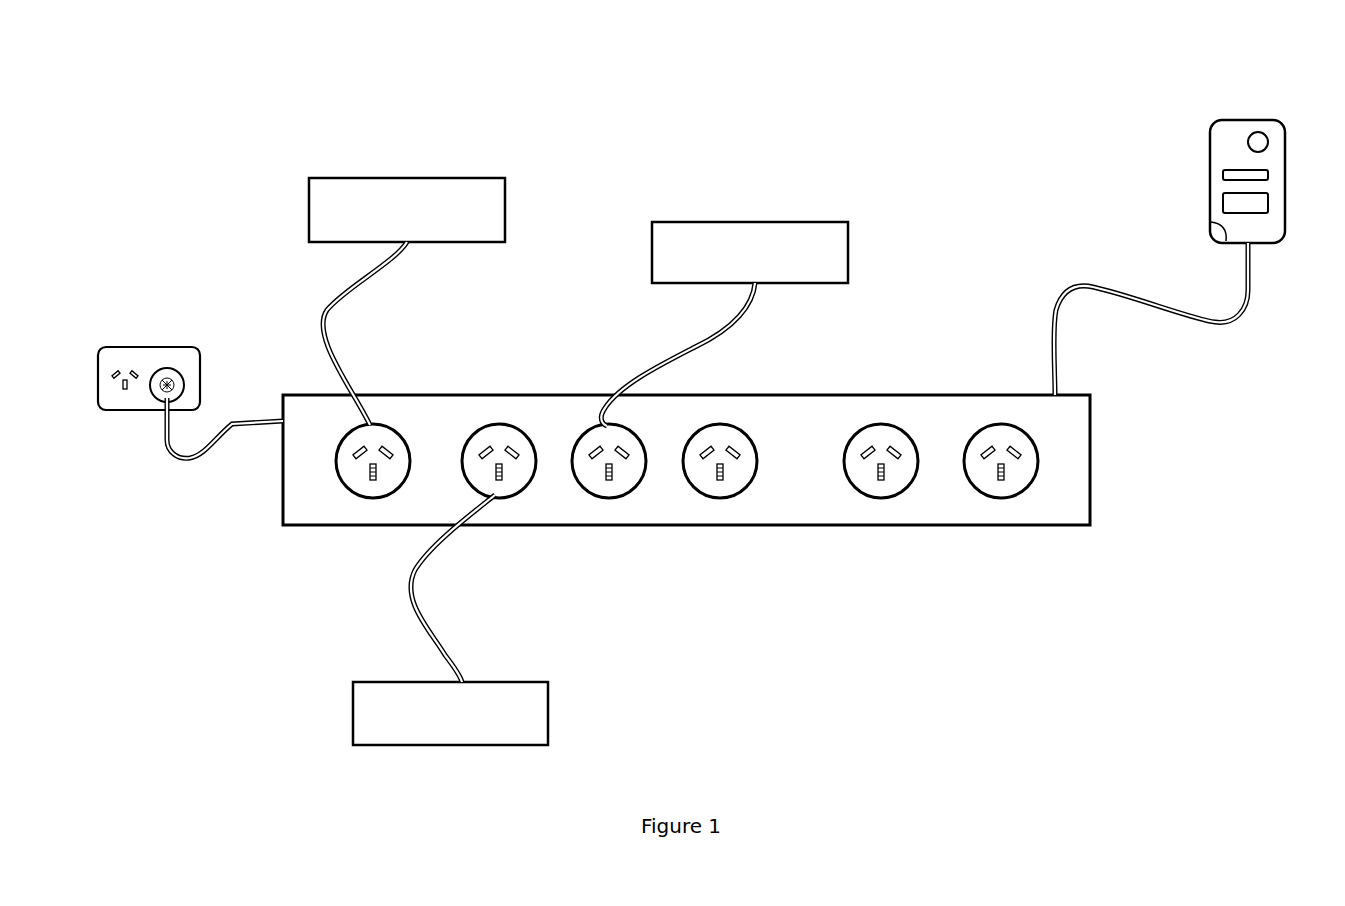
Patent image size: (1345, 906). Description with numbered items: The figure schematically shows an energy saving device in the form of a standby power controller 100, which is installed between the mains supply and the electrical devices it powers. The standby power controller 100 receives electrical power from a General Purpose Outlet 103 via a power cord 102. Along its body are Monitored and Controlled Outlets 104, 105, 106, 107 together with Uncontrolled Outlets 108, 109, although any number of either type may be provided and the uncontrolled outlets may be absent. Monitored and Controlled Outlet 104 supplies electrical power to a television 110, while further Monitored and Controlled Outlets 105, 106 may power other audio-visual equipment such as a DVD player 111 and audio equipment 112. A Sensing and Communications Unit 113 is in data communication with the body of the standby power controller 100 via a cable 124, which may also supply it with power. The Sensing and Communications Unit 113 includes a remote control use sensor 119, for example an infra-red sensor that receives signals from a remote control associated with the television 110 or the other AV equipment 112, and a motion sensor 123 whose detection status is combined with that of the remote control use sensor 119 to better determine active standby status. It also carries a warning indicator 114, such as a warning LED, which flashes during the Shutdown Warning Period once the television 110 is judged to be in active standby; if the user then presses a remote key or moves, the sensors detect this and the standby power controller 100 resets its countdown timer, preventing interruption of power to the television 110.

The standby power controller 100 is at (955, 513).
The power cord 102 is at (170, 443).
The General Purpose Outlet 103 is at (180, 352).
The Monitored and Controlled Outlet 104 is at (355, 483).
The Monitored and Controlled Outlet 105 is at (502, 422).
The Monitored and Controlled Outlet 106 is at (693, 493).
The Monitored and Controlled Outlet 107 is at (585, 493).
The Uncontrolled Outlet 108 is at (880, 423).
The Uncontrolled Outlet 109 is at (977, 427).
The television 110 is at (493, 202).
The DVD player 111 is at (370, 717).
The audio equipment 112 is at (837, 247).
The Sensing and Communications Unit 113 is at (1210, 130).
The warning indicator 114 is at (1273, 137).
The remote control use sensor 119 is at (1222, 173).
The motion sensor 123 is at (1223, 230).
The cable 124 is at (1090, 278).